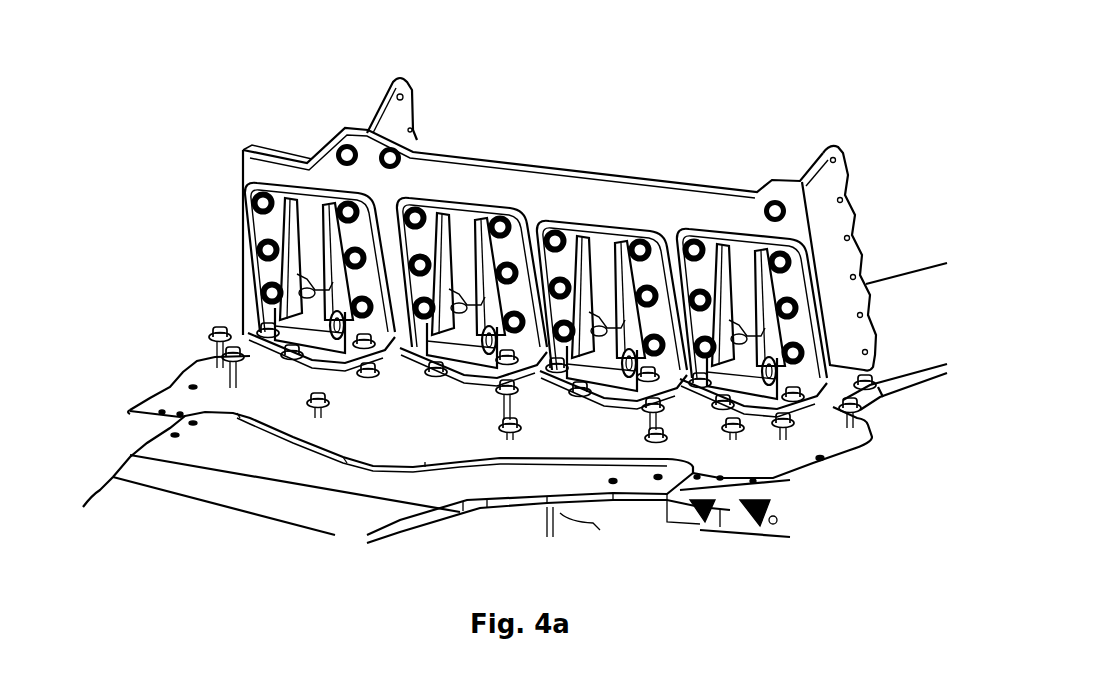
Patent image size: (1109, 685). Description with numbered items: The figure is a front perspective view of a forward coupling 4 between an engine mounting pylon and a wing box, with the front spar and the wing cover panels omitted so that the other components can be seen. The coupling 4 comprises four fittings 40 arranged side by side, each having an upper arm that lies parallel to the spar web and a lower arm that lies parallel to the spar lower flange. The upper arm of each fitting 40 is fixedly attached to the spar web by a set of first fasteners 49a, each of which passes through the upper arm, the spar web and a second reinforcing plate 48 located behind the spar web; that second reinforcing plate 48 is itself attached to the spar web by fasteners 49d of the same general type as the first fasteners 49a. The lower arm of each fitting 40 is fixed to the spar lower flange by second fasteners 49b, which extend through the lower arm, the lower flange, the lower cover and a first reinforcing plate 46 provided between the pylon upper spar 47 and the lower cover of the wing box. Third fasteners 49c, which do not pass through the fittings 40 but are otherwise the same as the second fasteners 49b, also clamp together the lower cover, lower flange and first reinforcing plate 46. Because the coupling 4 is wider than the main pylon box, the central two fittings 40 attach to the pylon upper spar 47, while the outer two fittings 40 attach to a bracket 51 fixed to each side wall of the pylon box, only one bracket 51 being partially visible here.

The forward coupling 4 is at (180, 103).
The fitting 40 is at (308, 213).
The first reinforcing plate 46 is at (210, 383).
The upper spar 47 is at (175, 450).
The second reinforcing plate 48 is at (830, 218).
The first fasteners 49a is at (268, 290).
The second fasteners 49b is at (263, 330).
The third fasteners 49c is at (213, 330).
The fasteners 49d is at (388, 155).
The bracket 51 is at (680, 503).